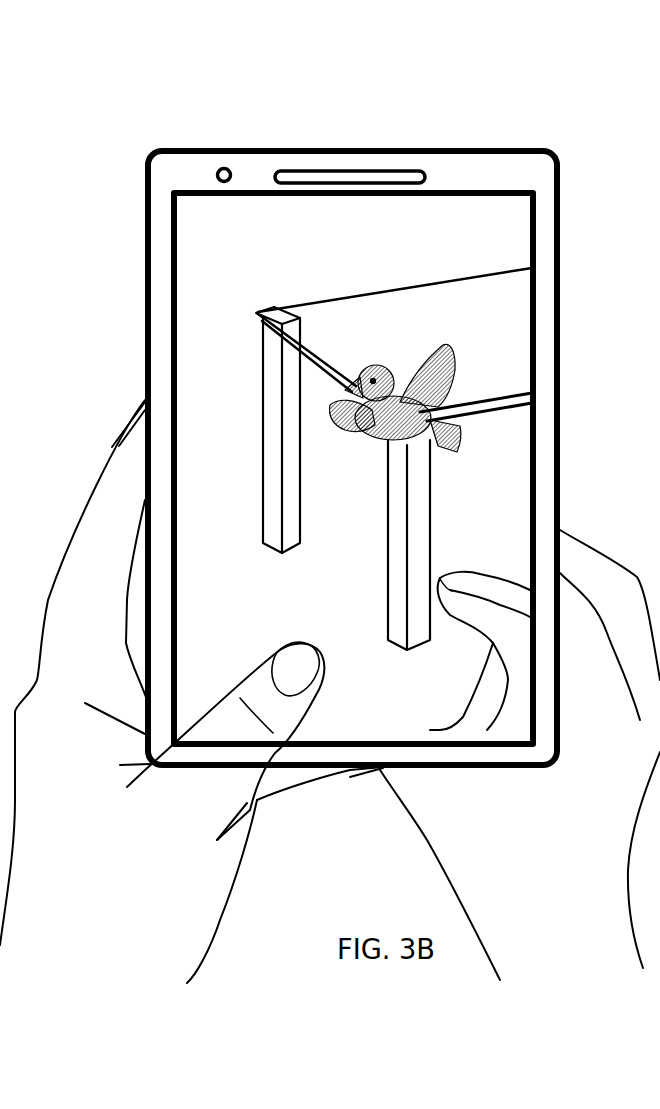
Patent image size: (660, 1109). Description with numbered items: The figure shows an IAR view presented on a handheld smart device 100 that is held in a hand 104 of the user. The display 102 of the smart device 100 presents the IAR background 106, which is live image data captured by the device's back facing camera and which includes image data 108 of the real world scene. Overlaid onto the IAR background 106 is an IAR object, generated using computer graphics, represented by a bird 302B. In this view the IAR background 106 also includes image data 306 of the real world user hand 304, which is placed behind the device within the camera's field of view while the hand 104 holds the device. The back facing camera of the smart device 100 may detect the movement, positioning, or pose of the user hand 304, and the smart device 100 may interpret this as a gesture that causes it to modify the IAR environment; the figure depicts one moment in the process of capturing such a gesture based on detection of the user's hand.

The smart device 100 is at (485, 149).
The display 102 is at (536, 323).
The first hand of user 104 is at (76, 802).
The IAR background 106 is at (387, 261).
The image data 108 is at (302, 323).
The bird 302B is at (354, 373).
The user hand 304 is at (548, 860).
The image data 306 is at (402, 717).